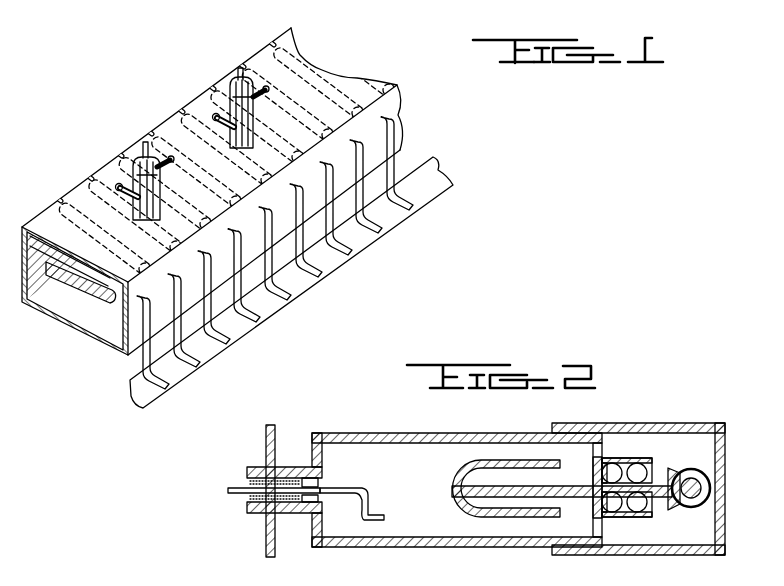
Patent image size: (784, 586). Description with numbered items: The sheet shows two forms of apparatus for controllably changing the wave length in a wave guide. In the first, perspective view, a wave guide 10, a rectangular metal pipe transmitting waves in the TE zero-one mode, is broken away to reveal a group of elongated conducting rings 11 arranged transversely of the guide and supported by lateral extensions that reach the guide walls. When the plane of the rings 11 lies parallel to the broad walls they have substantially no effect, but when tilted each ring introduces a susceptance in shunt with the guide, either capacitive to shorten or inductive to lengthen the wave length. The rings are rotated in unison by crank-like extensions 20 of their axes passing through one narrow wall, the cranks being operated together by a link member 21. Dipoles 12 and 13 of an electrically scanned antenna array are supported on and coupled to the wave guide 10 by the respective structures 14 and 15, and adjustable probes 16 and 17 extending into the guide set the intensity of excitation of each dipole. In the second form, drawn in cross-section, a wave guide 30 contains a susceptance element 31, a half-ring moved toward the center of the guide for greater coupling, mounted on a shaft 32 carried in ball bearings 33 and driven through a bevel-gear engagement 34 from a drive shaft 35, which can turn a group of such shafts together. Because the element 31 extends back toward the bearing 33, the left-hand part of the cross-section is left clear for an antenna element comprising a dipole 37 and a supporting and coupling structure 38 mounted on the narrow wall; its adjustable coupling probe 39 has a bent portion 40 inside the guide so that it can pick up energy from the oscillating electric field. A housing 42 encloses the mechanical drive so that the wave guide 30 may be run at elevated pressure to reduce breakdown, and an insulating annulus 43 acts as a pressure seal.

In FIG. 1, the wave guide 10 is at (68, 190).
In FIG. 1, the elongated conducting rings 11 is at (96, 292).
In FIG. 1, the dipole 12 is at (167, 155).
In FIG. 1, the dipole 13 is at (258, 90).
In FIG. 1, the supporting and coupling structure 14 is at (133, 180).
In FIG. 1, the supporting and coupling structure 15 is at (228, 110).
In FIG. 1, the adjustable probe 16 is at (150, 142).
In FIG. 1, the adjustable probe 17 is at (240, 68).
In FIG. 1, the crank-like extensions 20 is at (384, 137).
In FIG. 1, the link member 21 is at (423, 203).
In FIG. 2, the wave guide 30 is at (372, 540).
In FIG. 2, the susceptance element 31 is at (458, 472).
In FIG. 2, the shaft 32 is at (593, 490).
In FIG. 2, the ball bearings 33 is at (618, 518).
In FIG. 2, the bevel-gear engagement 34 is at (703, 471).
In FIG. 2, the drive shaft 35 is at (700, 504).
In FIG. 2, the dipole 37 is at (265, 527).
In FIG. 2, the supporting and coupling structure 38 is at (312, 465).
In FIG. 2, the adjustable coupling probe 39 is at (236, 490).
In FIG. 2, the bent portion 40 is at (370, 512).
In FIG. 2, the housing 42 is at (638, 423).
In FIG. 2, the insulating annulus 43 is at (318, 498).